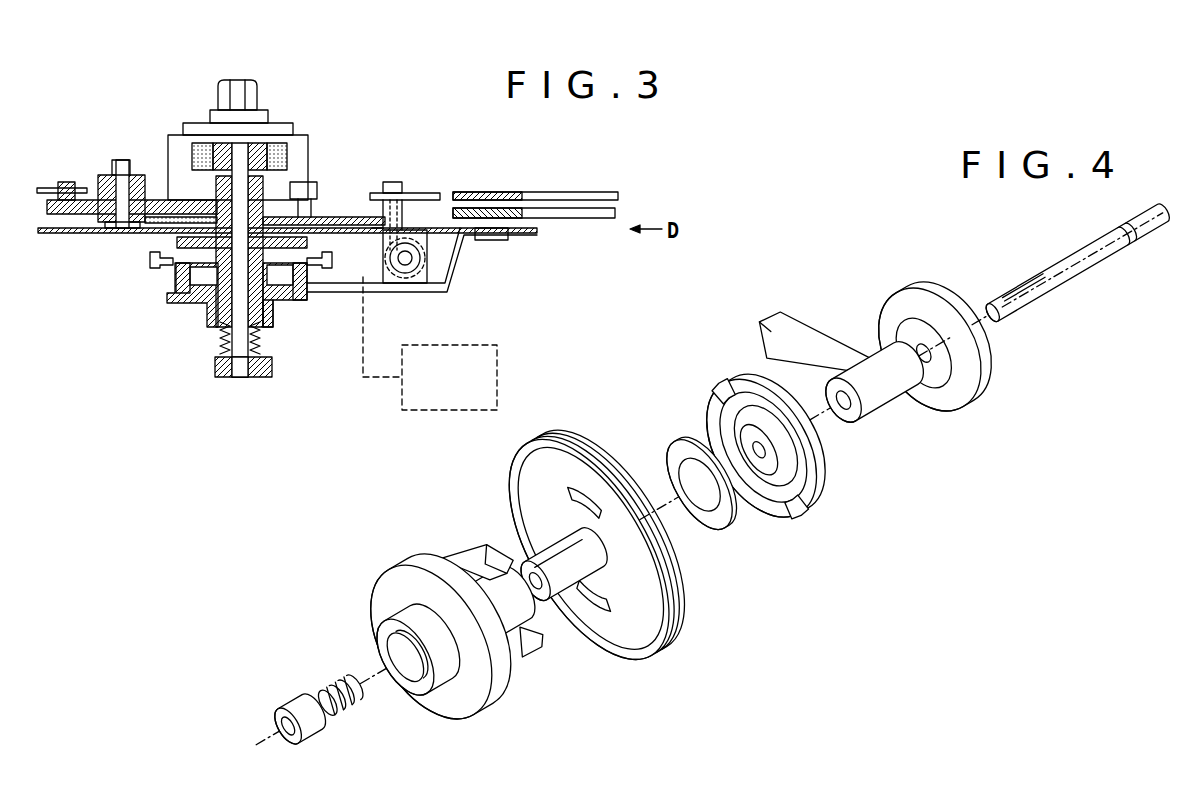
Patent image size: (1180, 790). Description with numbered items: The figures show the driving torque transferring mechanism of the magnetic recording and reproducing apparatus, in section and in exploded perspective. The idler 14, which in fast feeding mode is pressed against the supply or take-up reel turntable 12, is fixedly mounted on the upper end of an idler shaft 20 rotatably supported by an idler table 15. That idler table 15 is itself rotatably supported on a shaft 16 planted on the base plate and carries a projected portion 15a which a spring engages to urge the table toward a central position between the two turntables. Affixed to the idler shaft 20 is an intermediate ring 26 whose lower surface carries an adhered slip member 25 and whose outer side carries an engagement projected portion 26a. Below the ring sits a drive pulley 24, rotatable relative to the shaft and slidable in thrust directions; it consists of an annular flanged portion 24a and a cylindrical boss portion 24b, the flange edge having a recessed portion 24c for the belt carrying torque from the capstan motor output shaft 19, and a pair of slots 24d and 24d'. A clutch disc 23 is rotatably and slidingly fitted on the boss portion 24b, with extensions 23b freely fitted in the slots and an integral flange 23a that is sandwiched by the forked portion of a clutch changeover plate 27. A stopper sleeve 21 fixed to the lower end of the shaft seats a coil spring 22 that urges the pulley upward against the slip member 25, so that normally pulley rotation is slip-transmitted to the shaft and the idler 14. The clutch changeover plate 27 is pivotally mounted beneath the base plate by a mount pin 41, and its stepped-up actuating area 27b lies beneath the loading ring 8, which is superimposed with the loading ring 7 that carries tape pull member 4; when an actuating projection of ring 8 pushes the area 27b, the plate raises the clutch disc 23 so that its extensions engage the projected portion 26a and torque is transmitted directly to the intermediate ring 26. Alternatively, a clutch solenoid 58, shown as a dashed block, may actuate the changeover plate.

In FIG. 3, the tape pull member 4 is at (277, 147).
In FIG. 3, the loading ring 7 is at (538, 193).
In FIG. 3, the loading ring 8 is at (573, 218).
In FIG. 3, the reel turntable 12 is at (298, 140).
In FIG. 4, the reel turntable 12 is at (1033, 303).
In FIG. 4, the idler 14 is at (953, 397).
In FIG. 3, the idler table 15 is at (263, 183).
In FIG. 4, the idler table 15 is at (872, 412).
In FIG. 3, the projected portion 15a is at (60, 185).
In FIG. 3, the shaft 16 is at (113, 170).
In FIG. 3, the output shaft 19 is at (415, 230).
In FIG. 3, the idler shaft 20 is at (243, 378).
In FIG. 3, the stopper sleeve 21 is at (215, 360).
In FIG. 4, the stopper sleeve 21 is at (290, 695).
In FIG. 3, the coil spring 22 is at (263, 347).
In FIG. 4, the coil spring 22 is at (340, 677).
In FIG. 3, the clutch disc 23 is at (206, 315).
In FIG. 4, the clutch disc 23 is at (466, 646).
In FIG. 3, the flange 23a is at (167, 302).
In FIG. 4, the flange 23a is at (477, 705).
In FIG. 3, the extension 23b is at (170, 285).
In FIG. 4, the extension 23b is at (480, 548).
In FIG. 3, the drive pulley 24 is at (155, 308).
In FIG. 4, the drive pulley 24 is at (581, 557).
In FIG. 4, the annular flanged portion 24a is at (658, 643).
In FIG. 4, the cylindrical boss portion 24b is at (525, 555).
In FIG. 3, the recessed portion 24c is at (318, 248).
In FIG. 4, the recessed portion 24c is at (577, 440).
In FIG. 4, the slot 24d is at (607, 472).
In FIG. 4, the slot 24d' is at (590, 632).
In FIG. 3, the slip member 25 is at (177, 278).
In FIG. 4, the slip member 25 is at (713, 527).
In FIG. 3, the intermediate ring 26 is at (173, 242).
In FIG. 4, the intermediate ring 26 is at (761, 474).
In FIG. 4, the engagement projected portion 26a is at (717, 397).
In FIG. 3, the clutch changeover plate 27 is at (402, 292).
In FIG. 3, the actuating area 27b is at (518, 236).
In FIG. 3, the mount pin 41 is at (417, 258).
In FIG. 3, the clutch solenoid 58 is at (430, 412).